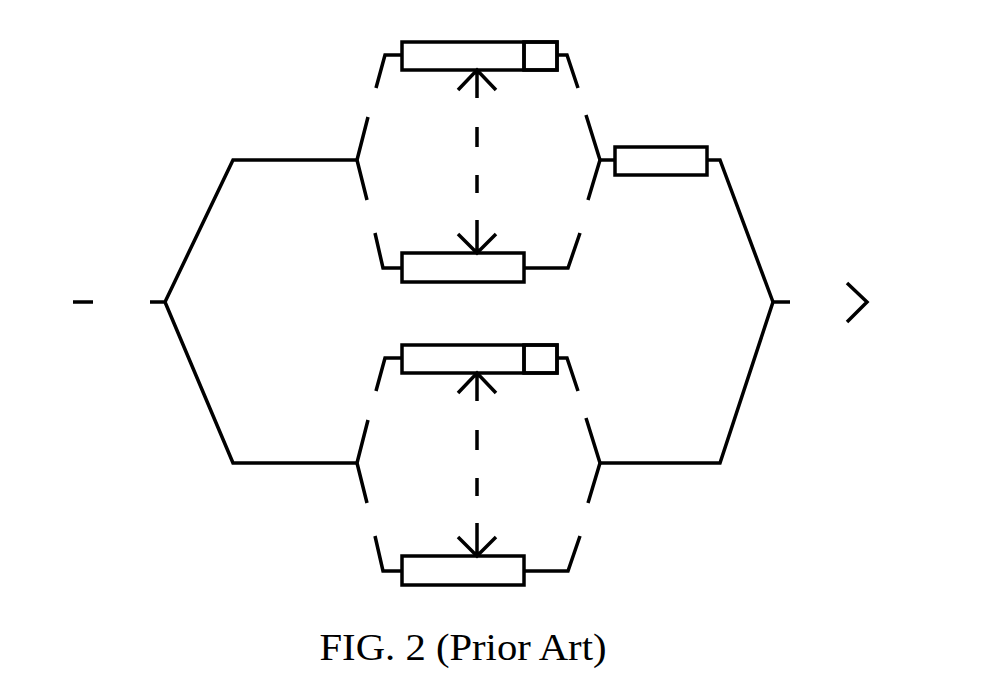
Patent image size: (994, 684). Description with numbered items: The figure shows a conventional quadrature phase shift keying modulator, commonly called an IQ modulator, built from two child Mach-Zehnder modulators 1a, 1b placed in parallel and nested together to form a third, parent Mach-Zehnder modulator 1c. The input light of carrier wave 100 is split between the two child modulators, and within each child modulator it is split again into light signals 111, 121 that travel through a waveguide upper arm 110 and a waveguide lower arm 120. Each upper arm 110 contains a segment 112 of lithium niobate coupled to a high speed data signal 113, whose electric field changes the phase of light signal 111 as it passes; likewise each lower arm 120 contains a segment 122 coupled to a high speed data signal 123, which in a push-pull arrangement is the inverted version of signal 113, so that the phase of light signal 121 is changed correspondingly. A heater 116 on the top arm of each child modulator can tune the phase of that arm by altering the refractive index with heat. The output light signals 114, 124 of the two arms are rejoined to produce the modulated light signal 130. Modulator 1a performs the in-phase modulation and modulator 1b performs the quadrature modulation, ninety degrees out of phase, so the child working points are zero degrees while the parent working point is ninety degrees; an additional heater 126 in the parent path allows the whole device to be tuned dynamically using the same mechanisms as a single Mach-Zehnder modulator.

The carrier wave 100 is at (215, 311).
The waveguide upper arm 110 is at (448, 231).
The light signal 111 is at (377, 259).
The segment 112 is at (479, 207).
The high speed data signal 113 is at (477, 260).
The light signal 114 is at (582, 259).
The heater 116 is at (567, 40).
The waveguide lower arm 120 is at (423, 372).
The light signal 121 is at (377, 365).
The segment 122 is at (463, 419).
The high speed data signal 123 is at (477, 365).
The light signal 124 is at (565, 365).
The additional heater 126 is at (686, 224).
The modulated light signal 130 is at (733, 373).
The Mach-Zehnder modulator 1a is at (208, 142).
The Mach-Zehnder modulator 1b is at (210, 481).
The Mach-Zehnder modulator 1c is at (773, 132).